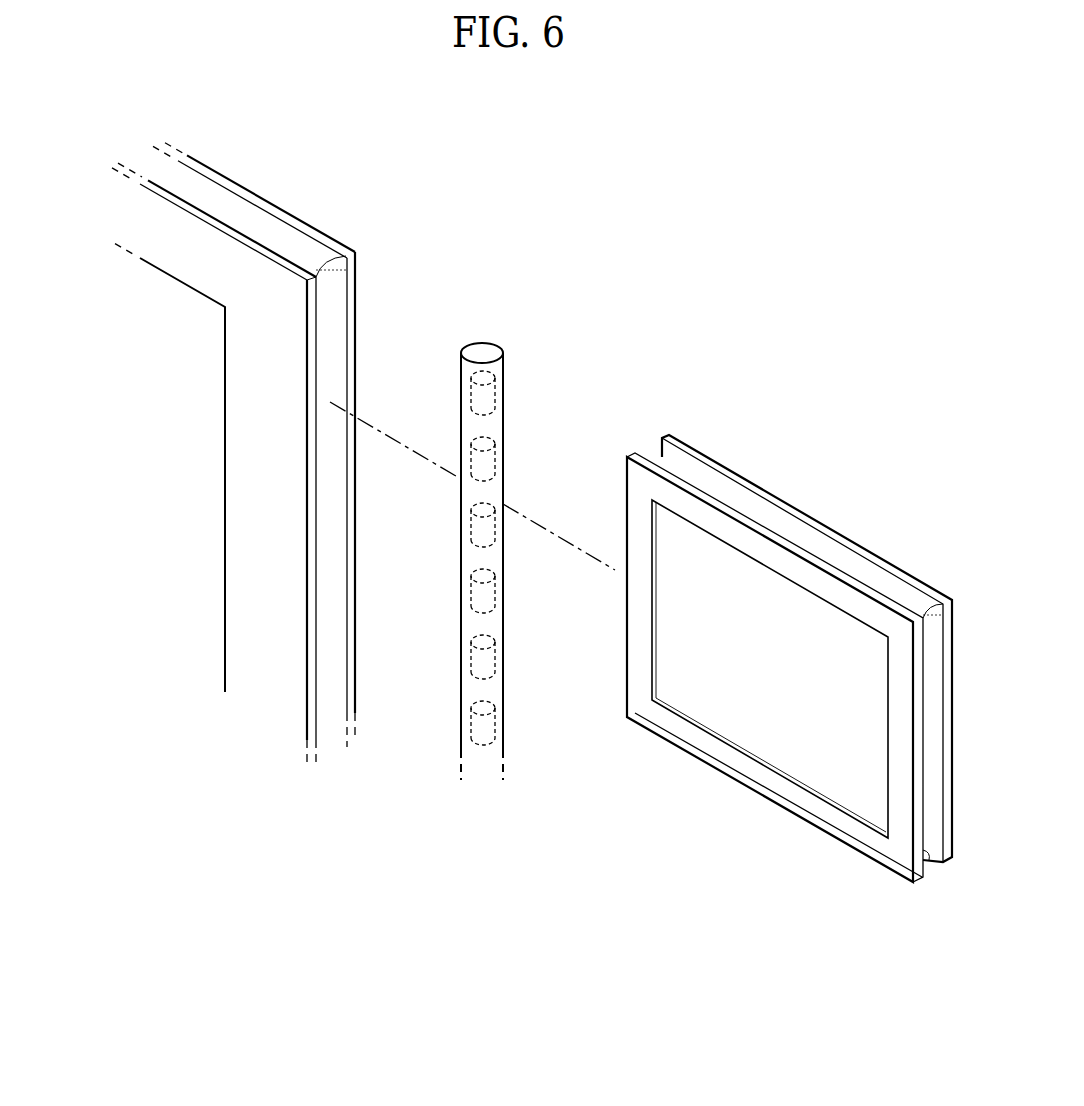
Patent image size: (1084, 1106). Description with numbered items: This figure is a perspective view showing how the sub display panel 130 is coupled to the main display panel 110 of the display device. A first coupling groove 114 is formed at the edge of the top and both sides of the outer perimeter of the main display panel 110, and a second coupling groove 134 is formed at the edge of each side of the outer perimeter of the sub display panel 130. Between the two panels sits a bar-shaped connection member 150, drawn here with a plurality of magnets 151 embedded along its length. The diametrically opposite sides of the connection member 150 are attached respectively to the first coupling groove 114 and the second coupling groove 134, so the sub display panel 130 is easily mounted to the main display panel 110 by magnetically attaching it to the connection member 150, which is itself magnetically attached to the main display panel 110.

The main display panel 110 is at (150, 441).
The first coupling groove 114 is at (250, 220).
The connection member 150 is at (484, 350).
The magnets 151 is at (495, 457).
The sub display panel 130 is at (820, 515).
The second coupling groove 134 is at (657, 452).